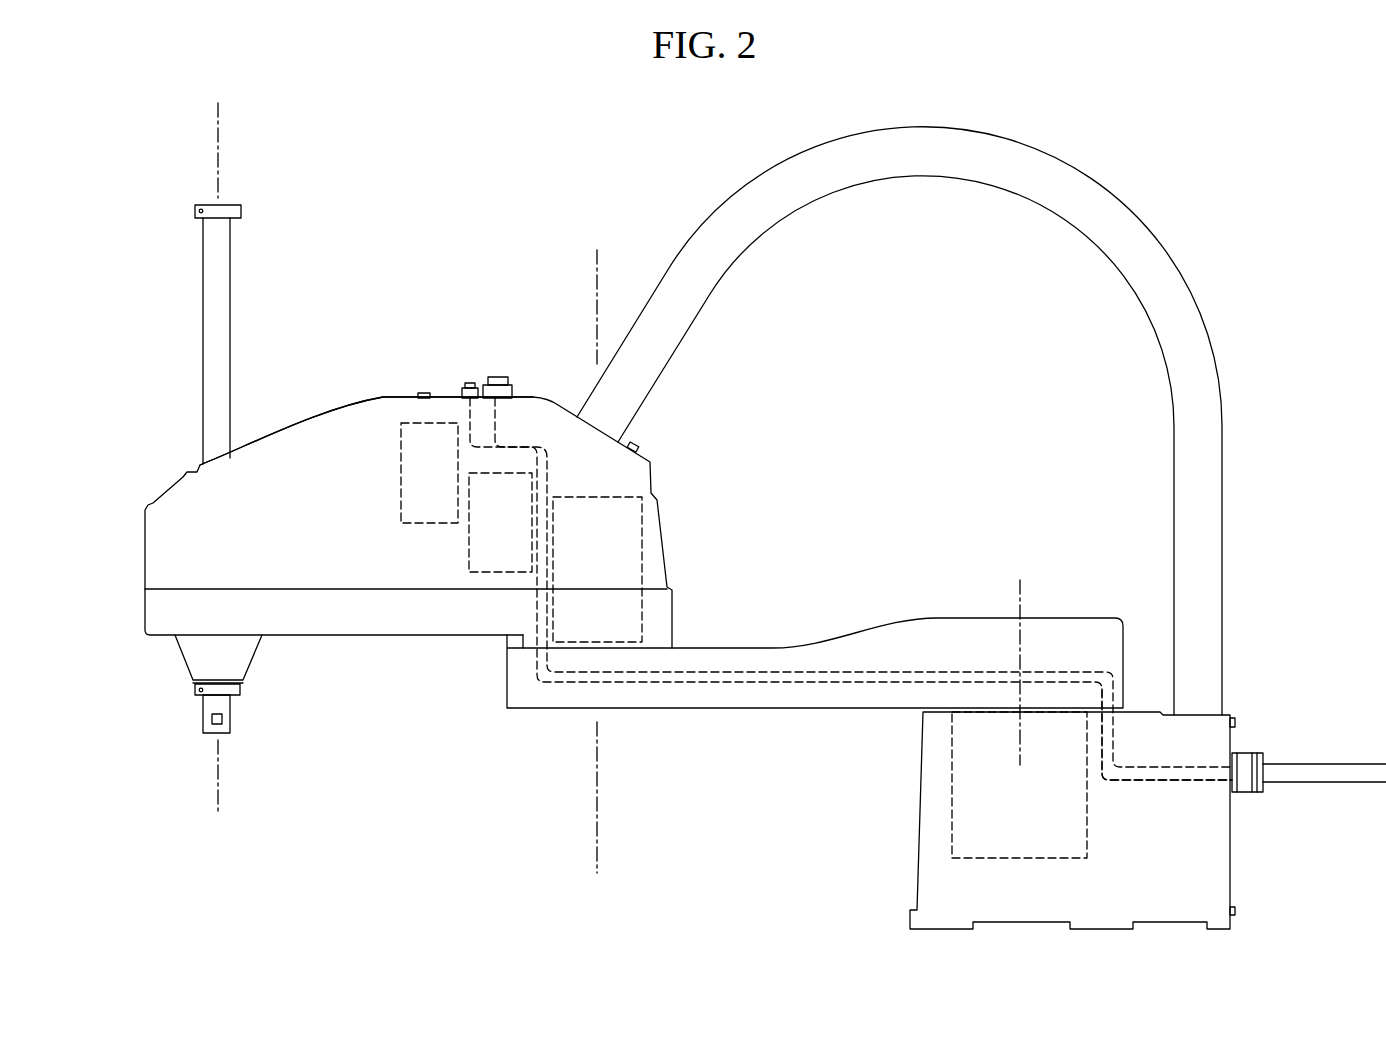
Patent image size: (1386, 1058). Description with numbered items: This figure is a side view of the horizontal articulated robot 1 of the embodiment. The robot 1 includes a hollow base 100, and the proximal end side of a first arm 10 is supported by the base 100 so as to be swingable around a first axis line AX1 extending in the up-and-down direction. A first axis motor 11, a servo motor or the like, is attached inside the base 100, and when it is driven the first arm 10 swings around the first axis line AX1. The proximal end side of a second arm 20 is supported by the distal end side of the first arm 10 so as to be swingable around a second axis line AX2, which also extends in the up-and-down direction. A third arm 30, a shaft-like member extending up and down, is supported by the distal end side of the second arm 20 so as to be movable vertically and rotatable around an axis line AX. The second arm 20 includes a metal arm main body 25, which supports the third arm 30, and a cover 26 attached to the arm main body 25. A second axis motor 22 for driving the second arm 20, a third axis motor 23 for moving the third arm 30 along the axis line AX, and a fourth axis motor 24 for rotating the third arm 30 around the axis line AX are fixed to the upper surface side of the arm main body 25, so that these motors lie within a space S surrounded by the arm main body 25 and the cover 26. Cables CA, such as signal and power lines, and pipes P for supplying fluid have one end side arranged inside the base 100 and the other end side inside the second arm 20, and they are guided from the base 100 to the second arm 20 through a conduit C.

The horizontal articulated robot 1 is at (632, 488).
The first arm 10 is at (816, 561).
The first axis motor 11 is at (952, 797).
The second arm 20 is at (632, 562).
The second axis motor 22 is at (642, 541).
The third axis motor 23 is at (401, 487).
The fourth axis motor 24 is at (487, 573).
The arm main body 25 is at (317, 640).
The cover 26 is at (279, 430).
The third arm 30 is at (165, 283).
The base 100 is at (1086, 786).
The conduit C is at (1160, 248).
The cables CA is at (1177, 780).
The pipes P is at (1145, 765).
The space S is at (357, 430).
The axis line AX is at (218, 160).
The first axis line AX1 is at (1020, 595).
The second axis line AX2 is at (597, 792).